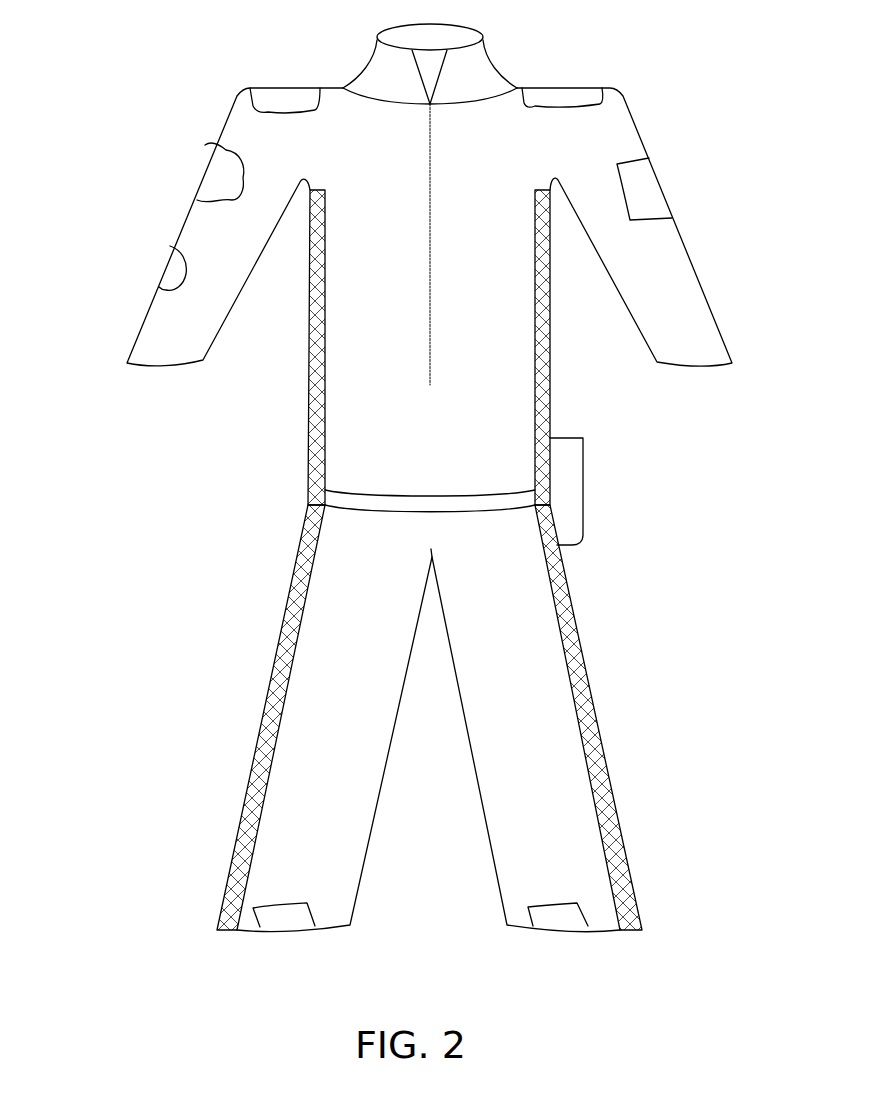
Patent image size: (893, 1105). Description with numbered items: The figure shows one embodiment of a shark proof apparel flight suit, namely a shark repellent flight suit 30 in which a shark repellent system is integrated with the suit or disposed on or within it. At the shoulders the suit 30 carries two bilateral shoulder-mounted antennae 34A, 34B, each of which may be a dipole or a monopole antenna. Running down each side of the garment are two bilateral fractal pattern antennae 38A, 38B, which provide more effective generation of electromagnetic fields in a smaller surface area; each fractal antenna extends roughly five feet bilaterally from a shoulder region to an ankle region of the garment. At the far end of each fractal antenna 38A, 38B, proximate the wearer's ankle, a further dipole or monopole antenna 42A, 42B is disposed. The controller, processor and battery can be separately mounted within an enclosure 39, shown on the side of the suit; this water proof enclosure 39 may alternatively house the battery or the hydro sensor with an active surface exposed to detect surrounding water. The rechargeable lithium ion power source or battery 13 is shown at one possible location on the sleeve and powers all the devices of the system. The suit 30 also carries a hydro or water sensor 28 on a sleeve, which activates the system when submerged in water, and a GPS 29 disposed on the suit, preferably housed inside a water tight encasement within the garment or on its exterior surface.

The shark repellent flight suit 30 is at (90, 221).
The GPS 29 is at (203, 181).
The hydro sensor 28 is at (167, 268).
The shoulder-mounted antenna 34A is at (287, 88).
The shoulder-mounted antenna 34B is at (558, 88).
The battery 13 is at (657, 190).
The fractal pattern antenna 38A is at (308, 465).
The fractal pattern antenna 38B is at (550, 375).
The enclosure 39 is at (583, 487).
The dipole or monopole antenna 42A is at (281, 931).
The dipole or monopole antenna 42B is at (573, 931).